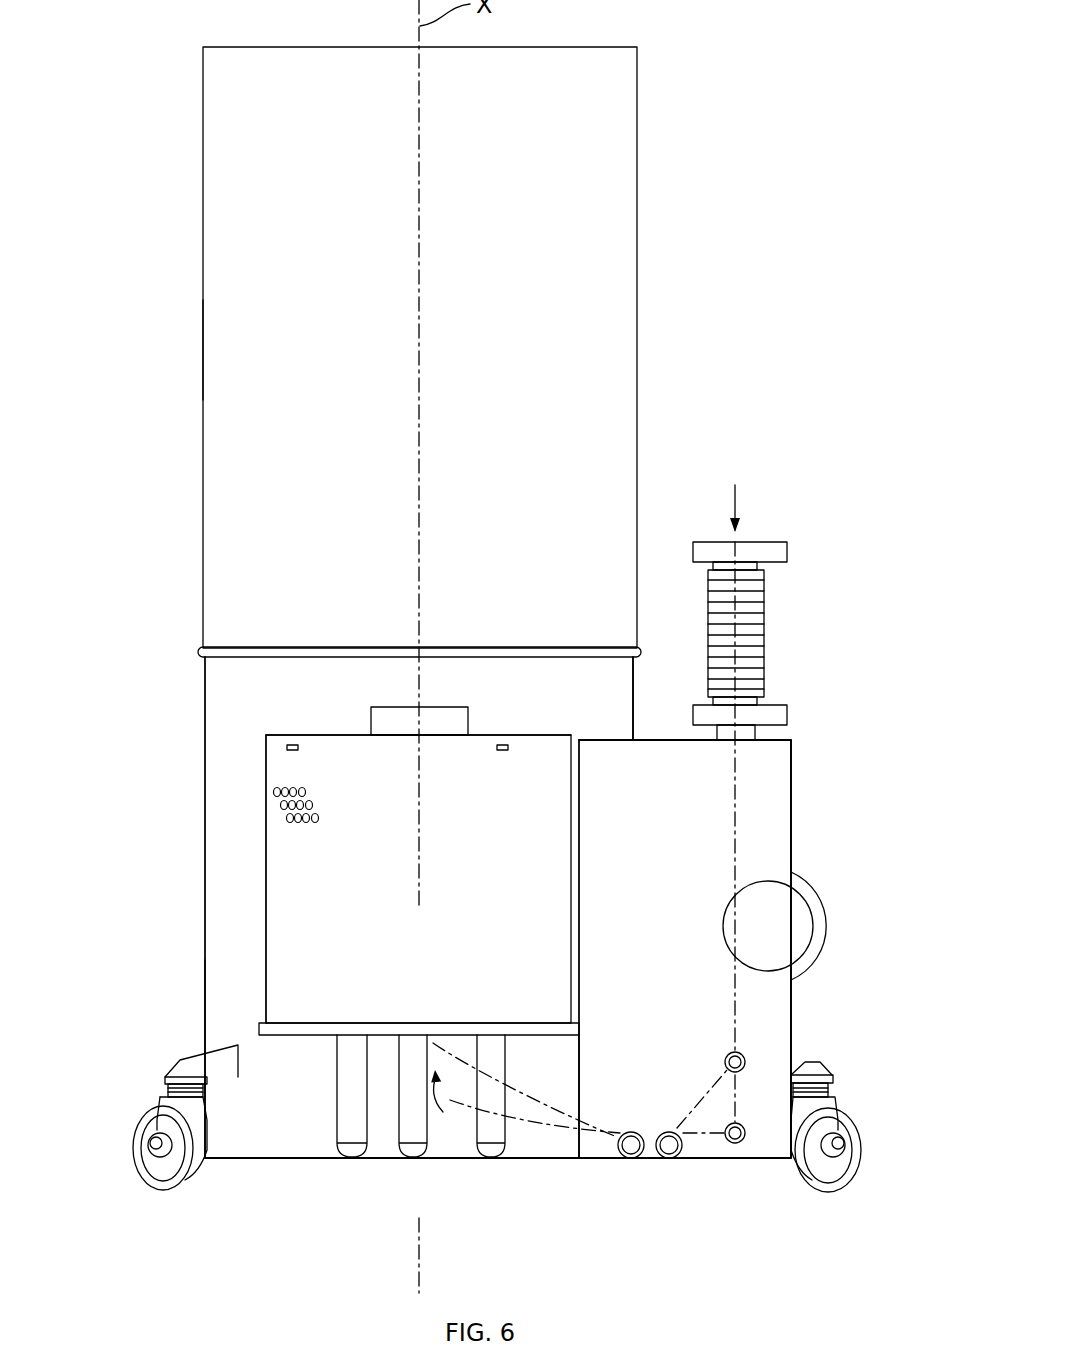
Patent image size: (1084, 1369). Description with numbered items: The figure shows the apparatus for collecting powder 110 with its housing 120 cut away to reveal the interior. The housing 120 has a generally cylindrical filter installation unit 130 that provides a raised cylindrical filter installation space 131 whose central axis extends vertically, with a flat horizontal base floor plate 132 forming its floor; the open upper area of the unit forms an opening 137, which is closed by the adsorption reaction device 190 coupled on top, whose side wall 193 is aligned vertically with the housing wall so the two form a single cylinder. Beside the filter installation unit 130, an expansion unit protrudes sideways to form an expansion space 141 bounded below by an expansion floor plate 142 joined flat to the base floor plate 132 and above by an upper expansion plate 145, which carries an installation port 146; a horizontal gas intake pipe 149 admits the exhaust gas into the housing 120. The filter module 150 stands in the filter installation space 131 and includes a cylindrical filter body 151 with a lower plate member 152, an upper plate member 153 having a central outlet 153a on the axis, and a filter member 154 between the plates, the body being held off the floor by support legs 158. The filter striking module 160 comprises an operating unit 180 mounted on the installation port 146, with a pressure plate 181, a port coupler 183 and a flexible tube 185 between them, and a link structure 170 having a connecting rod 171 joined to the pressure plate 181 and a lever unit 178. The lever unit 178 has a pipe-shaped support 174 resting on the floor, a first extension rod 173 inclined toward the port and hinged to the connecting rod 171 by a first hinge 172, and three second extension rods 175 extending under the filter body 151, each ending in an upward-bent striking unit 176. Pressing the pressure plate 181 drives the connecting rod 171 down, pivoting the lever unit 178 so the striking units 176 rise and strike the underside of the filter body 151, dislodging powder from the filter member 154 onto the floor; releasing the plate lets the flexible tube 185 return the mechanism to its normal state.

The apparatus for collecting powder 110 is at (180, 688).
The housing 120 is at (205, 960).
The filter installation unit 130 is at (205, 733).
The filter installation space 131 is at (298, 1140).
The base floor plate 132 is at (323, 1158).
The opening 137 is at (270, 647).
The expansion space 141 is at (688, 768).
The expansion floor plate 142 is at (697, 1158).
The upper expansion plate 145 is at (652, 740).
The installation port 146 is at (755, 733).
The gas intake pipe 149 is at (813, 920).
The filter module 150 is at (300, 893).
The filter body 151 is at (300, 965).
The lower plate member 152 is at (292, 1035).
The upper plate member 153 is at (345, 735).
The outlet 153a is at (410, 707).
The filter member 154 is at (365, 785).
The support legs 158 is at (487, 1135).
The filter striking module 160 is at (755, 780).
The link structure 170 is at (771, 1084).
The connecting rod 171 is at (735, 810).
The first hinge 172 is at (745, 1060).
The first extension rod 173 is at (697, 1110).
The support 174 is at (668, 1158).
The second extension rods 175 is at (523, 1092).
The striking unit 176 is at (433, 1045).
The lever unit 178 is at (620, 1098).
The operating unit 180 is at (797, 592).
The pressure plate 181 is at (765, 542).
The port coupler 183 is at (787, 706).
The flexible tube 185 is at (764, 590).
The adsorption reaction device 190 is at (637, 262).
The side wall 193 is at (203, 352).